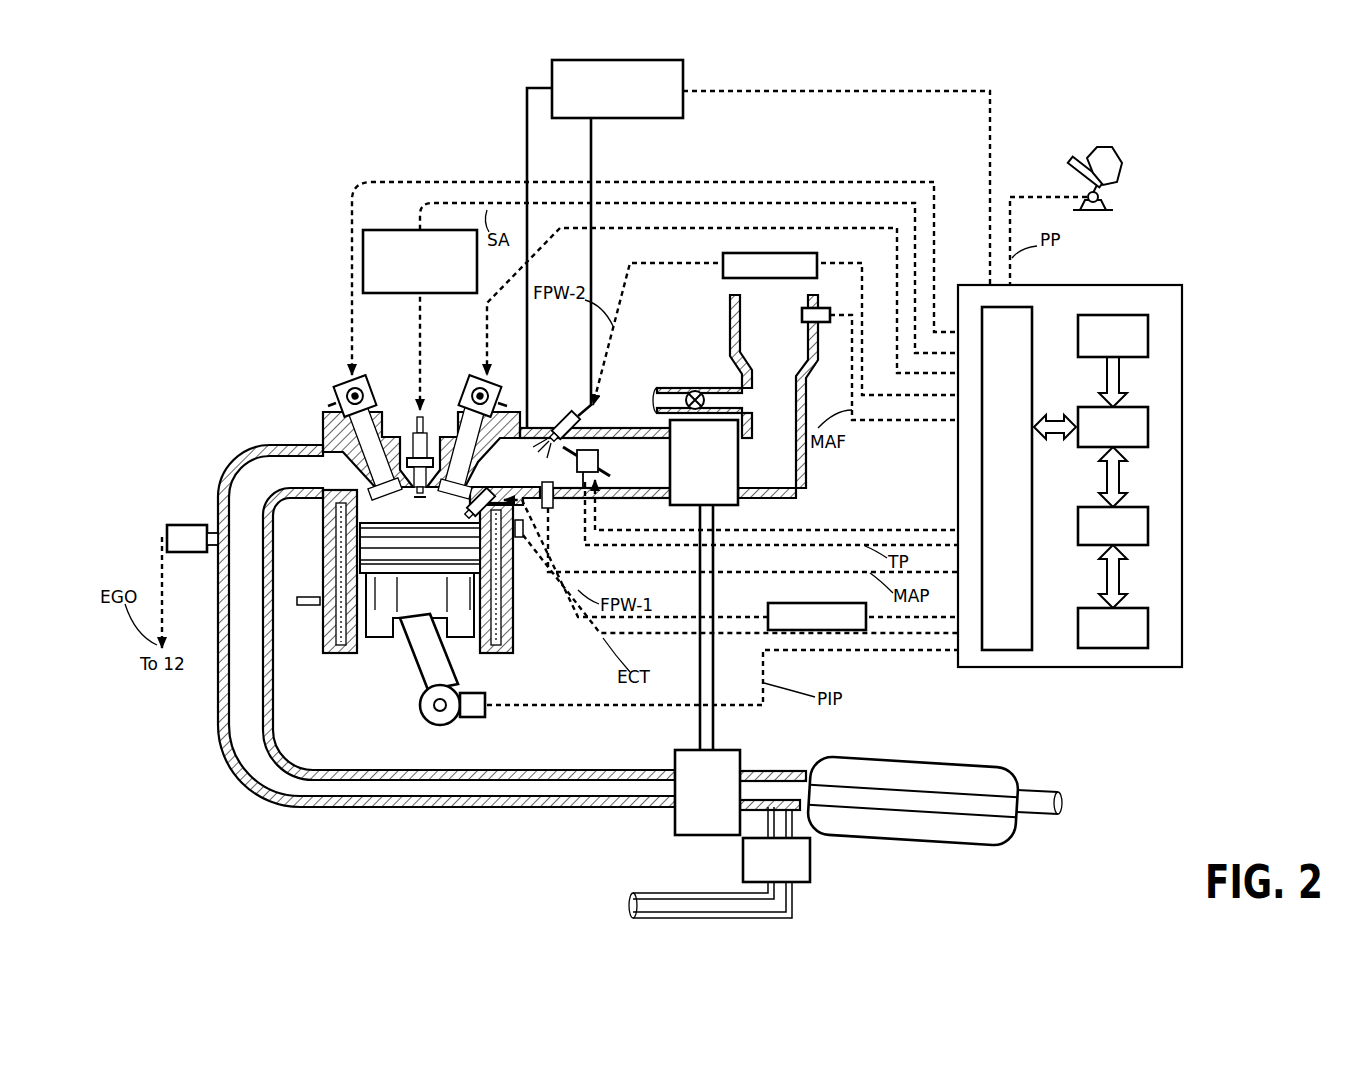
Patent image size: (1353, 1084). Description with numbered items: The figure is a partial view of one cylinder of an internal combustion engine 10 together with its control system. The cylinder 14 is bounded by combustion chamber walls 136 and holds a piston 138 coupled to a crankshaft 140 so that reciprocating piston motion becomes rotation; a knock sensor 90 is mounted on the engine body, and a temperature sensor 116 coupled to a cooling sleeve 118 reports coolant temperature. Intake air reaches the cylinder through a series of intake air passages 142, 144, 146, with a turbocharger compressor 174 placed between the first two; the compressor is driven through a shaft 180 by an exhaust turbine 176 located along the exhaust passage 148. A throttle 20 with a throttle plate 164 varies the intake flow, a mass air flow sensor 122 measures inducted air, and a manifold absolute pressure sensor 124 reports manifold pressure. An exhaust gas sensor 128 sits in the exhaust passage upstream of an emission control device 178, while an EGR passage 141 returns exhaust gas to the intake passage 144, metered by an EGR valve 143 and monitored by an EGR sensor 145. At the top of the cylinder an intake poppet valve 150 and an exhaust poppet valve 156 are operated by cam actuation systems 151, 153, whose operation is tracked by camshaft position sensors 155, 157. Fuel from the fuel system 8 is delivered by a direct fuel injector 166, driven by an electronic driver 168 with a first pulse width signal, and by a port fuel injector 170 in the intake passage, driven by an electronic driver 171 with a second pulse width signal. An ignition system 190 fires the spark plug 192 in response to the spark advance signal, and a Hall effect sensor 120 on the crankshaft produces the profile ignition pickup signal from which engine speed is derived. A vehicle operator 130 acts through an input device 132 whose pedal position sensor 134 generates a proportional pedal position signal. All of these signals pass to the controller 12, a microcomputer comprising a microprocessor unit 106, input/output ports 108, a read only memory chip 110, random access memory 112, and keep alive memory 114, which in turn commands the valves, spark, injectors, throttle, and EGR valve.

The fuel system 8 is at (662, 117).
The internal combustion engine 10 is at (270, 270).
The controller 12 is at (1172, 285).
The cylinder 14 is at (340, 507).
The throttle 20 is at (585, 436).
The knock sensor 90 is at (320, 606).
The microprocessor unit 106 is at (1150, 420).
The input/output ports 108 is at (1034, 315).
The read only memory chip 110 is at (1150, 326).
The random access memory 112 is at (1150, 525).
The keep alive memory 114 is at (1150, 623).
The temperature sensor 116 is at (522, 540).
The cooling sleeve 118 is at (513, 630).
The Hall effect sensor 120 is at (478, 718).
The mass air flow sensor 122 is at (814, 308).
The manifold absolute pressure sensor 124 is at (553, 505).
The exhaust gas sensor 128 is at (167, 530).
The vehicle operator 130 is at (1122, 162).
The input device 132 is at (1072, 170).
The pedal position sensor 134 is at (1102, 205).
The combustion chamber walls 136 is at (360, 650).
The piston 138 is at (405, 620).
The crankshaft 140 is at (428, 722).
The EGR passage 141 is at (682, 392).
The intake air passage 142 is at (790, 340).
The EGR valve 143 is at (700, 393).
The intake air passage 144 is at (655, 472).
The EGR sensor 145 is at (810, 870).
The intake air passage 146 is at (560, 470).
The exhaust passage 148 is at (308, 480).
The intake poppet valve 150 is at (437, 445).
The cam actuation system 151 is at (468, 380).
The cam actuation system 153 is at (372, 382).
The camshaft position sensor 155 is at (495, 400).
The exhaust poppet valve 156 is at (383, 483).
The camshaft position sensor 157 is at (383, 403).
The throttle plate 164 is at (556, 428).
The fuel injector 166 is at (486, 494).
The electronic driver 168 is at (768, 608).
The fuel injector 170 is at (565, 415).
The electronic driver 171 is at (723, 263).
The compressor 174 is at (738, 500).
The exhaust turbine 176 is at (675, 820).
The emission control device 178 is at (903, 765).
The shaft 180 is at (703, 713).
The ignition system 190 is at (385, 230).
The spark plug 192 is at (417, 425).